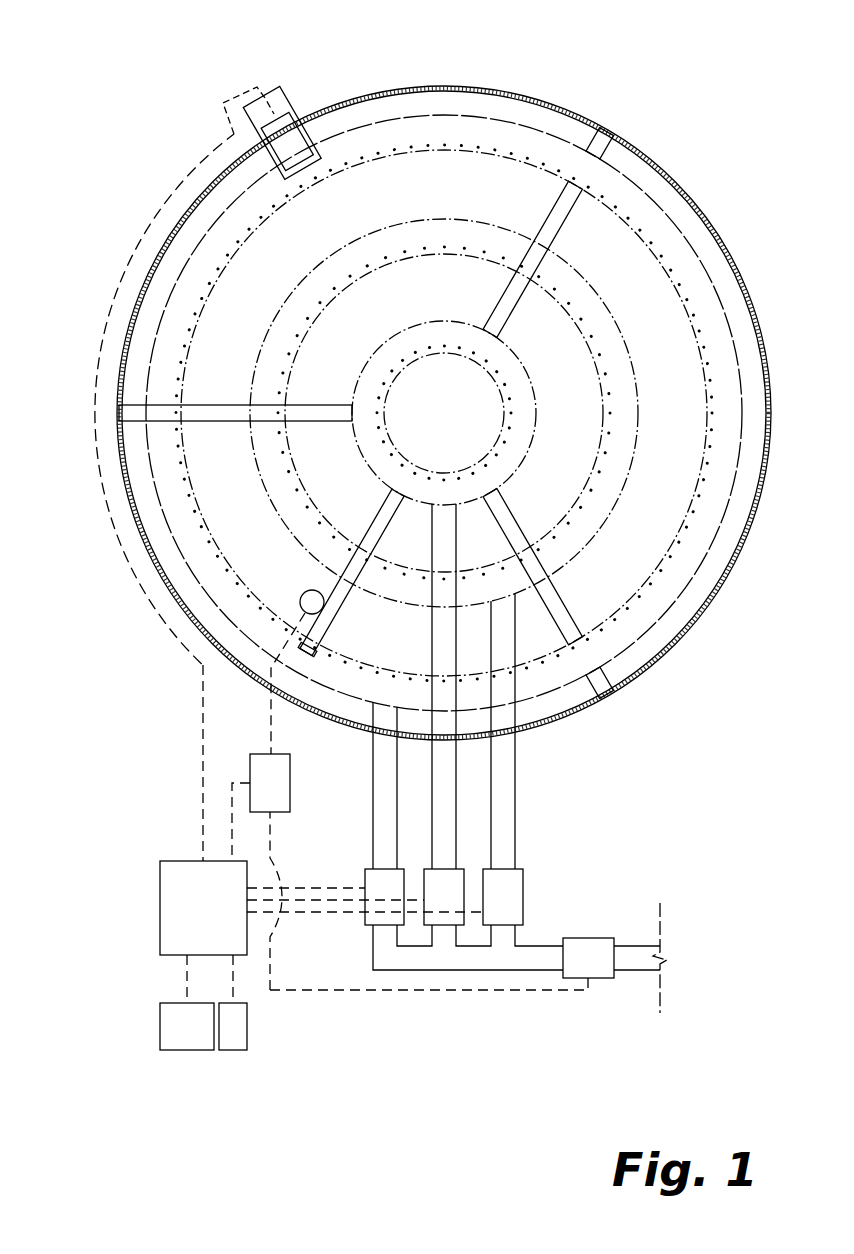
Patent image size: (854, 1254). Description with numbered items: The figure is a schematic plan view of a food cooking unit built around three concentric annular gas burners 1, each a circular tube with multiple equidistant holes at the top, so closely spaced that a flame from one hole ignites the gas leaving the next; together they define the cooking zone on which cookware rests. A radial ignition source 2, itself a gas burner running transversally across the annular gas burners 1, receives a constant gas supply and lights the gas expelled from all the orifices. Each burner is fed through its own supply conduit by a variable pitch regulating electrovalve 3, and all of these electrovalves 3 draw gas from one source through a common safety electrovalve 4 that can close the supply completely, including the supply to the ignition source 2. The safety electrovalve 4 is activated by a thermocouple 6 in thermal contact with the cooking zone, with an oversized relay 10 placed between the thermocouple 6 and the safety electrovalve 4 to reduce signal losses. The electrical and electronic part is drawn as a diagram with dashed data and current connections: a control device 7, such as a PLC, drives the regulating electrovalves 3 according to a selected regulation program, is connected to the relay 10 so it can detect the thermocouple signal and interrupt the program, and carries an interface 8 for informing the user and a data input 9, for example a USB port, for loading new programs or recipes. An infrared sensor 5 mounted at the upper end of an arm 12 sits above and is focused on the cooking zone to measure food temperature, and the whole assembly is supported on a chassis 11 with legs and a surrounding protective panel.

The annular gas burner 1 is at (703, 282).
The ignition source 2 is at (333, 608).
The variable pitch regulating electrovalve 3 is at (464, 737).
The safety electrovalve 4 is at (468, 958).
The infrared sensor 5 is at (289, 133).
The thermocouple 6 is at (304, 592).
The control device 7 is at (321, 932).
The interface 8 is at (187, 1026).
The data input 9 is at (233, 1026).
The relay 10 is at (268, 801).
The chassis 11 is at (705, 212).
The arm 12 is at (268, 93).